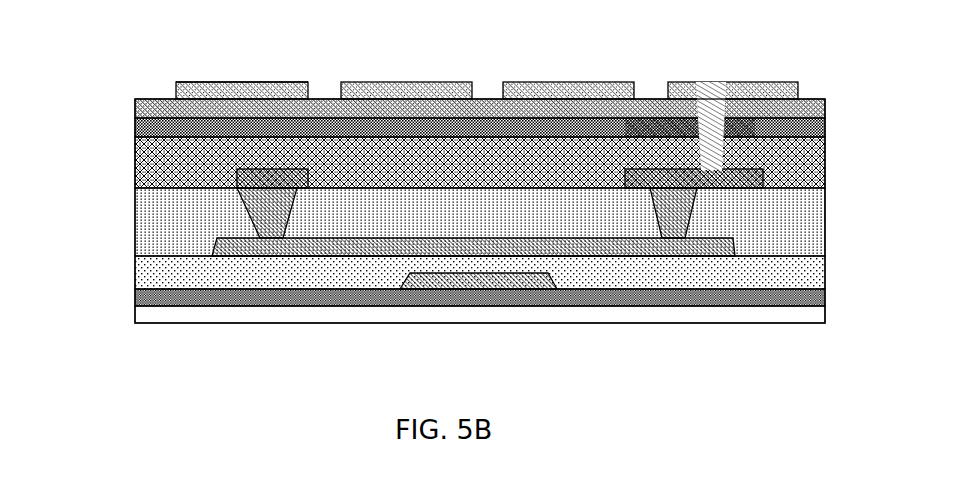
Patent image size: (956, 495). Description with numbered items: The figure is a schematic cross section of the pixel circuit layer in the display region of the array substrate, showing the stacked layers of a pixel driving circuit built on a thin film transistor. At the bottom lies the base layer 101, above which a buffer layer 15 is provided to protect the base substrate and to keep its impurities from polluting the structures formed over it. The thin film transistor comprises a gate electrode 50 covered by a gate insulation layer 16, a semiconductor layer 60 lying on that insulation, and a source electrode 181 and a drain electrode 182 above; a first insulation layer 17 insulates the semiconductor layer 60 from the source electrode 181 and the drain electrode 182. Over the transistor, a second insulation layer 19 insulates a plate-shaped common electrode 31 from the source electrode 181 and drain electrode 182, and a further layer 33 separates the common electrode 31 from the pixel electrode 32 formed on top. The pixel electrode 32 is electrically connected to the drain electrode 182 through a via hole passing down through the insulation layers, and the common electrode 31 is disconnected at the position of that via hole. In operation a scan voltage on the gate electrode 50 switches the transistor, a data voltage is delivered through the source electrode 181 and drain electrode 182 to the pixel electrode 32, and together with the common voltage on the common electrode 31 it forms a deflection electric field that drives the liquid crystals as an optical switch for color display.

The base substrate 101 is at (135, 313).
The buffer layer 15 is at (135, 298).
The gate insulation layer 16 is at (135, 272).
The first insulation layer 17 is at (145, 224).
The second insulation layer 19 is at (135, 166).
The common electrode 31 is at (135, 127).
The pixel electrode 32 is at (174, 82).
The second insulating layer 33 is at (135, 105).
The gate electrode 50 is at (480, 273).
The semiconductor layer 60 is at (590, 247).
The source electrode 181 is at (233, 83).
The drain electrode 182 is at (825, 153).